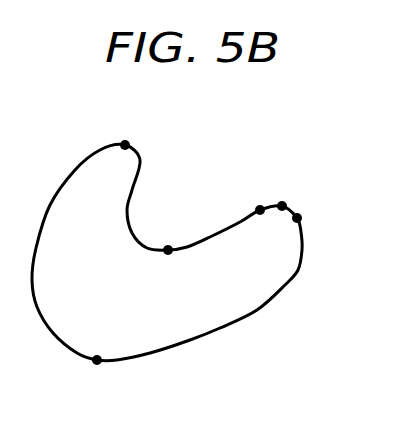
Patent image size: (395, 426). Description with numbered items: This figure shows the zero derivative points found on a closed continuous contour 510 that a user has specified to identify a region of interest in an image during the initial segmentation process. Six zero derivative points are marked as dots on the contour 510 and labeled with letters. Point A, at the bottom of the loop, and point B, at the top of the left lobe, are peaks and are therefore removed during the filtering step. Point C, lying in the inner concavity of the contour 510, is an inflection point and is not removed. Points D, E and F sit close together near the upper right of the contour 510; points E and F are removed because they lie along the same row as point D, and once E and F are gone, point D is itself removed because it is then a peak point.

The closed continuous contour 510 is at (218, 329).
The zero derivative point A is at (98, 377).
The zero derivative point B is at (125, 129).
The zero derivative point C is at (169, 265).
The zero derivative point D is at (256, 193).
The zero derivative point E is at (282, 191).
The zero derivative point F is at (304, 206).